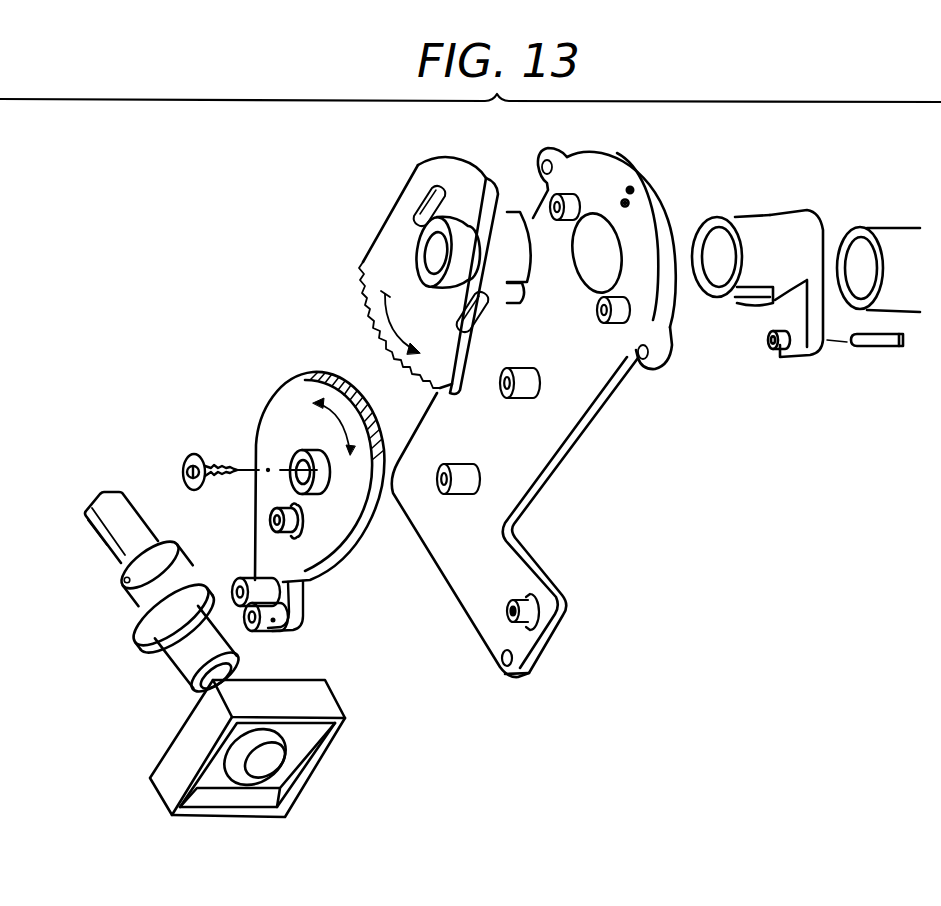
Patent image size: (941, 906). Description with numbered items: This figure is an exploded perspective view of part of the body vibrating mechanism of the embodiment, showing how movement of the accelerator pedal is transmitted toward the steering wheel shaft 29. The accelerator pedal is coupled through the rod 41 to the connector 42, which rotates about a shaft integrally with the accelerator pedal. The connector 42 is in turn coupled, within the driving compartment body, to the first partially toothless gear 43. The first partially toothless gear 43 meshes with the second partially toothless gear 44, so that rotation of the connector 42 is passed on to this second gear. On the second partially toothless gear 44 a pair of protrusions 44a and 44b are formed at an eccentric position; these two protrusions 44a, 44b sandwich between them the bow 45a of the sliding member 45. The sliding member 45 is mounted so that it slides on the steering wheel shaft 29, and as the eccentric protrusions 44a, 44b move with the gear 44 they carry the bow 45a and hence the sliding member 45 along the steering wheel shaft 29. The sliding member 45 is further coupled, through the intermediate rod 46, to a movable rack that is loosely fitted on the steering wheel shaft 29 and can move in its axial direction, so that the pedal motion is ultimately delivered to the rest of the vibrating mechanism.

The steering wheel shaft 29 is at (145, 508).
The rod 41 is at (903, 347).
The connector 42 is at (770, 303).
The first partially toothless gear 43 is at (393, 247).
The second partially toothless gear 44 is at (319, 383).
The protrusion 44a is at (232, 590).
The protrusion 44b is at (278, 630).
The sliding member 45 is at (135, 594).
The bow 45a is at (150, 630).
The intermediate rod 46 is at (107, 558).